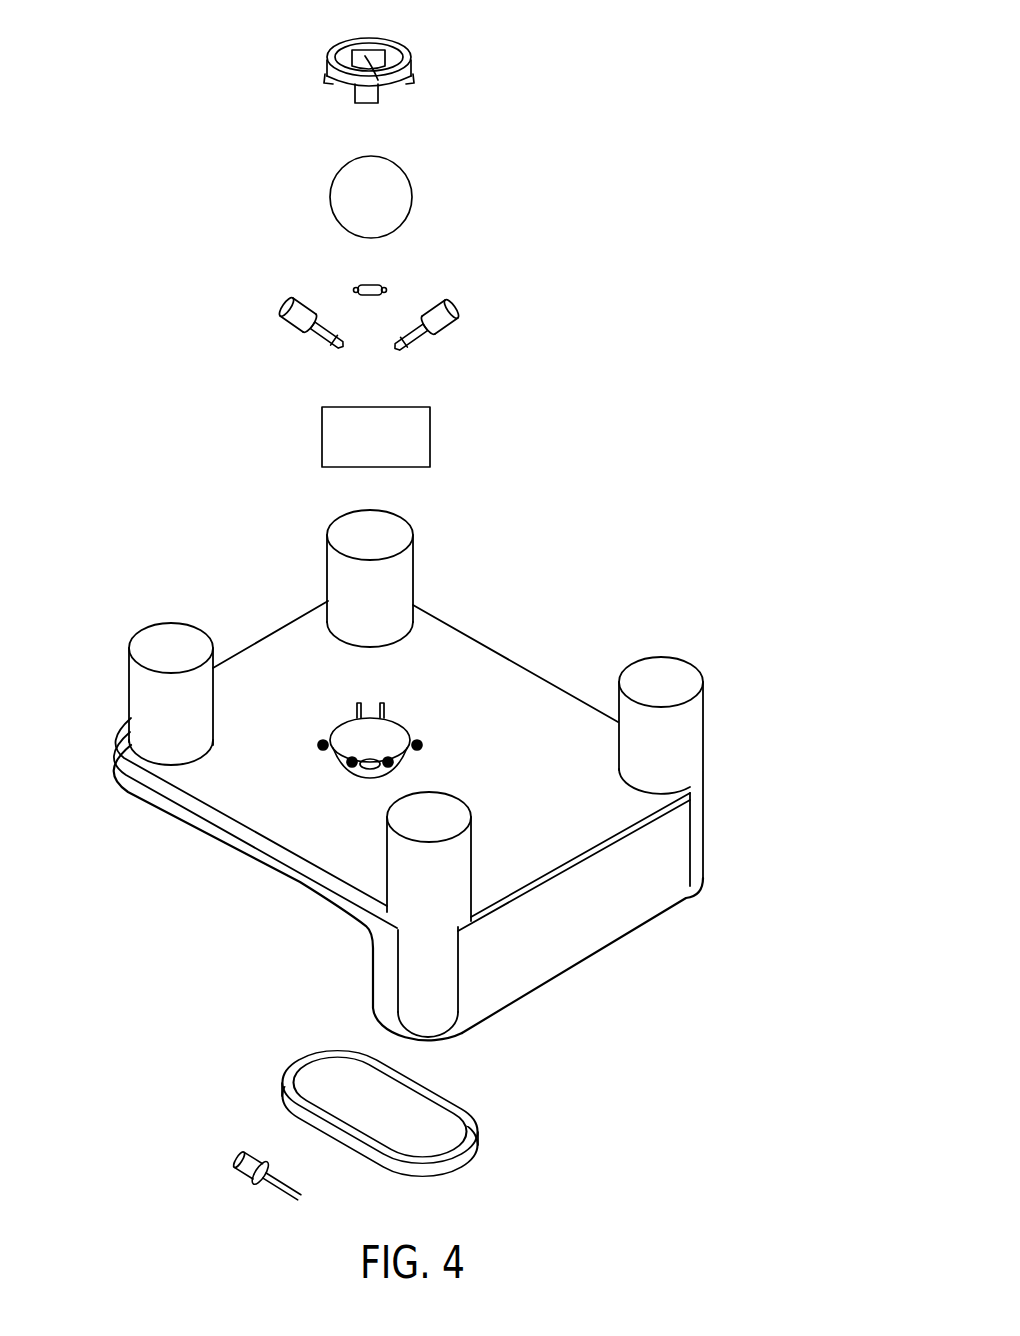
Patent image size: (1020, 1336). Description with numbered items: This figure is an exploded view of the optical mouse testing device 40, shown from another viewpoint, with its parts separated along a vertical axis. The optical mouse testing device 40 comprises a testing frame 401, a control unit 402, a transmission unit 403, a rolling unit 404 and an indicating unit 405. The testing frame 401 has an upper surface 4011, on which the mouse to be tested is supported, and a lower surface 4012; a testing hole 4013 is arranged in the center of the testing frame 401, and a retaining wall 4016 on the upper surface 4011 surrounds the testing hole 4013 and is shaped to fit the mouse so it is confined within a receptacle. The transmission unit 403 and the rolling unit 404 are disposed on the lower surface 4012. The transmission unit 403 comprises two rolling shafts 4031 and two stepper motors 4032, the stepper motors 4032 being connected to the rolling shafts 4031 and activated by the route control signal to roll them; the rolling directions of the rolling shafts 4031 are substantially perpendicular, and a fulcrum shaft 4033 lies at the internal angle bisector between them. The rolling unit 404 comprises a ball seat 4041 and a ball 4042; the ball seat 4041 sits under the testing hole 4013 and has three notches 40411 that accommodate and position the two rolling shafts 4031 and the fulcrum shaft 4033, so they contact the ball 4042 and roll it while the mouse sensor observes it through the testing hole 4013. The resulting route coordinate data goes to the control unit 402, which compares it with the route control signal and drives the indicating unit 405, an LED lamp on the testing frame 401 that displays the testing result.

The optical mouse testing device 40 is at (201, 149).
The testing frame 401 is at (555, 680).
The upper surface 4011 is at (270, 873).
The lower surface 4012 is at (293, 643).
The testing hole 4013 is at (377, 755).
The retaining wall 4016 is at (460, 1100).
The control unit 402 is at (417, 450).
The transmission unit 403 is at (570, 247).
The rolling shaft 4031 is at (328, 337).
The stepper motor 4032 is at (295, 310).
The fulcrum shaft 4033 is at (373, 280).
The rolling unit 404 is at (532, 40).
The ball seat 4041 is at (403, 43).
The notch 40411 is at (340, 90).
The ball 4042 is at (390, 210).
The indicating unit 405 is at (247, 1157).